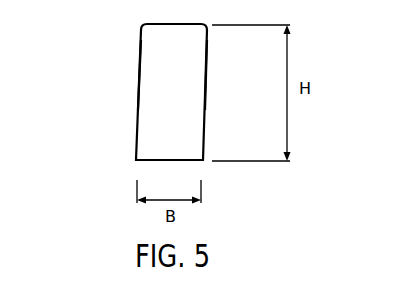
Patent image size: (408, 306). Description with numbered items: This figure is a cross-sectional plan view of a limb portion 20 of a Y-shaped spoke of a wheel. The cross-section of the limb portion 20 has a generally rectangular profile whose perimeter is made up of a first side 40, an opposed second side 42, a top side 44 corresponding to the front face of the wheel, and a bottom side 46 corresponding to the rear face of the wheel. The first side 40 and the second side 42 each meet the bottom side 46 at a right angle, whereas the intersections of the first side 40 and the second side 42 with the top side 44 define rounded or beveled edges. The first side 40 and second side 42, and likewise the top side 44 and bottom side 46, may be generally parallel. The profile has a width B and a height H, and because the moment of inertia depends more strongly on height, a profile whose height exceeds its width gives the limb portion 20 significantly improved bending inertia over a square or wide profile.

The limb portion 20 is at (105, 149).
The first side 40 is at (141, 77).
The second side 42 is at (204, 92).
The top side 44 is at (178, 24).
The bottom side 46 is at (165, 161).